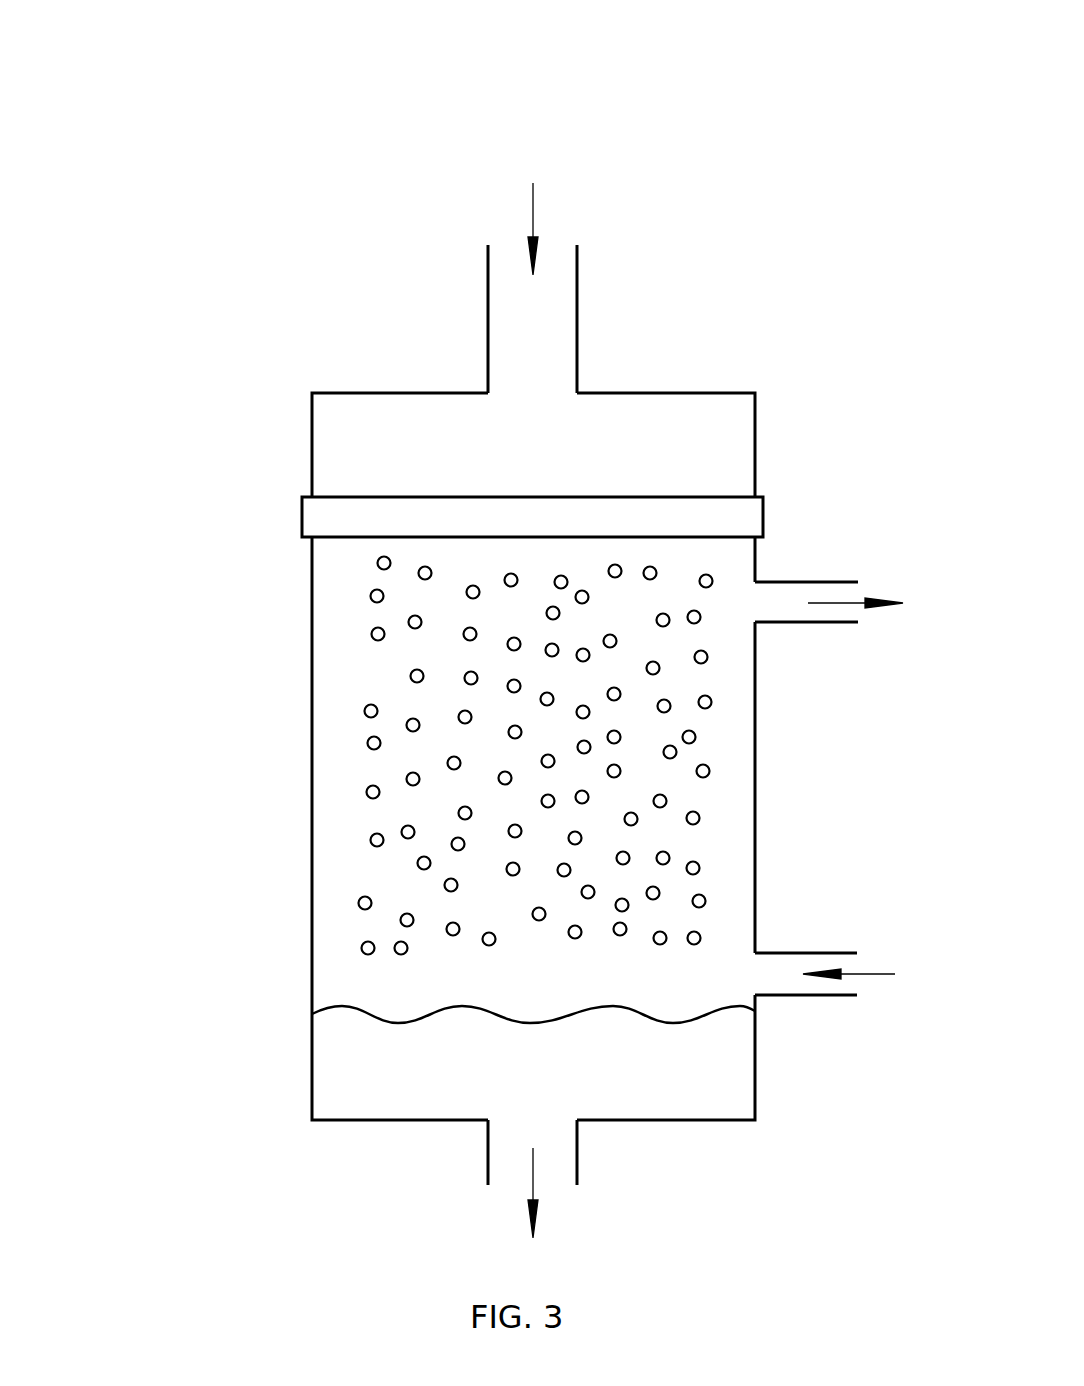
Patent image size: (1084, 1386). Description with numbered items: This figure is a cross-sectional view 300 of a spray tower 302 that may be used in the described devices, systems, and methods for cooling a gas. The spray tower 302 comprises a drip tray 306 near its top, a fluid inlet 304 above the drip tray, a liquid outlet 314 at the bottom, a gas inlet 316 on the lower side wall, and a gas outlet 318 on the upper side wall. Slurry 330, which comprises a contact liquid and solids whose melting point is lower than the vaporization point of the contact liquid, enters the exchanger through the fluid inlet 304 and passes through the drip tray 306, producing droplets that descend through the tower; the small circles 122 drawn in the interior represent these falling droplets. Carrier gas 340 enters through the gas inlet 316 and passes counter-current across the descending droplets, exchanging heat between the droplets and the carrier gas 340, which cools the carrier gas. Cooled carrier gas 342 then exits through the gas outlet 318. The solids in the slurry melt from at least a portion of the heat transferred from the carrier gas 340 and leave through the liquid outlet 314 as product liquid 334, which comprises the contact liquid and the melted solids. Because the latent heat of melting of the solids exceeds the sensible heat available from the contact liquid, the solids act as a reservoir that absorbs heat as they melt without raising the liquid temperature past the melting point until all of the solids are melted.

The cross-sectional view 300 is at (140, 67).
The spray tower 302 is at (312, 393).
The fluid inlet 304 is at (487, 282).
The drip tray 306 is at (609, 528).
The liquid outlet 314 is at (487, 1172).
The gas inlet 316 is at (833, 952).
The gas outlet 318 is at (822, 622).
The bubbles / particles 122 is at (358, 905).
The slurry 330 is at (530, 212).
The product liquid 334 is at (534, 1214).
The carrier gas 340 is at (879, 975).
The cooled carrier gas 342 is at (885, 603).